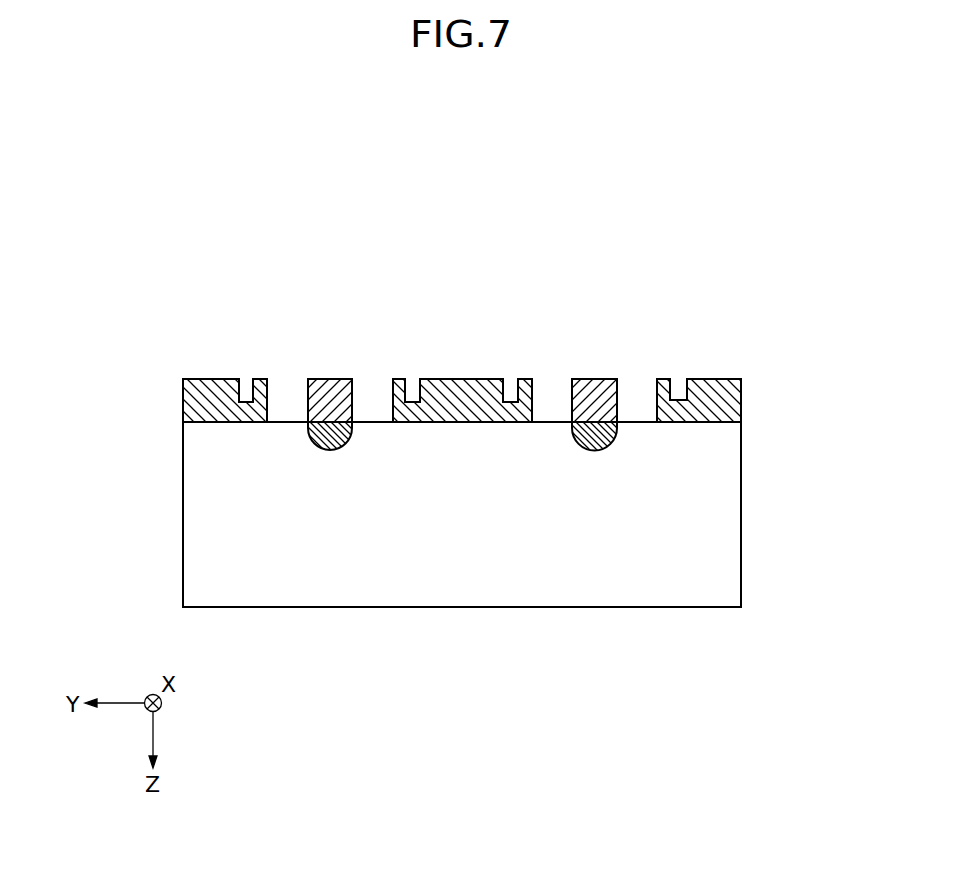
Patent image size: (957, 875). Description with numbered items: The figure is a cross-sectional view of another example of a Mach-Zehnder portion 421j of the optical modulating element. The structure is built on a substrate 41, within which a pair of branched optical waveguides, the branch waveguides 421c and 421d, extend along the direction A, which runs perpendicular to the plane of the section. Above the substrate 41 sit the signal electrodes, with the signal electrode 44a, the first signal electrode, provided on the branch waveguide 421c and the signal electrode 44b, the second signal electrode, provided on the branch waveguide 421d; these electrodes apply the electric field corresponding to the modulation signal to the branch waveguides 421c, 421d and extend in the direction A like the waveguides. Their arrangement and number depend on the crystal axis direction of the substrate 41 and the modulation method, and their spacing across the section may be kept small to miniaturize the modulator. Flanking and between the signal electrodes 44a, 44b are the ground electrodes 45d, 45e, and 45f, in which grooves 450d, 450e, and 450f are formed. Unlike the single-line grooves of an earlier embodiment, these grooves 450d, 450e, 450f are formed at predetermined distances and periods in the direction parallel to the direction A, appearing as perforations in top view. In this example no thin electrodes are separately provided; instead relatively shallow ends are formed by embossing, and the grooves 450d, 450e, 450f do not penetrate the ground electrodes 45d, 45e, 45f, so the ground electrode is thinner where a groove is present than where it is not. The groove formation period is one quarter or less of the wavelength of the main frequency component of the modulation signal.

The Mach-Zehnder portion 421j is at (788, 251).
The substrate 41 is at (723, 518).
The signal electrode 44a is at (617, 398).
The signal electrode 44b is at (352, 400).
The ground electrode 45d is at (533, 405).
The ground electrode 45e is at (742, 392).
The ground electrode 45f is at (268, 405).
The groove 450d is at (510, 403).
The groove 450e is at (678, 399).
The groove 450f is at (246, 403).
The branch waveguide 421c is at (613, 441).
The branch waveguide 421d is at (348, 443).